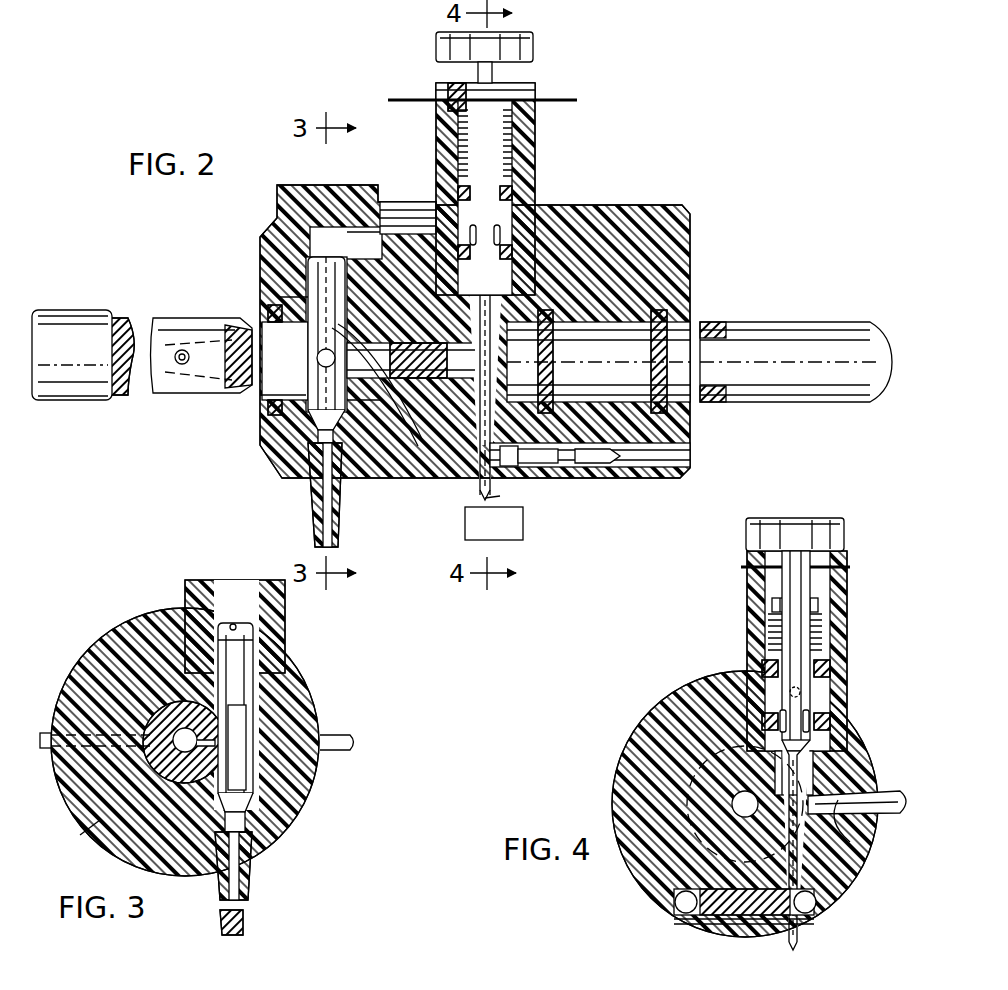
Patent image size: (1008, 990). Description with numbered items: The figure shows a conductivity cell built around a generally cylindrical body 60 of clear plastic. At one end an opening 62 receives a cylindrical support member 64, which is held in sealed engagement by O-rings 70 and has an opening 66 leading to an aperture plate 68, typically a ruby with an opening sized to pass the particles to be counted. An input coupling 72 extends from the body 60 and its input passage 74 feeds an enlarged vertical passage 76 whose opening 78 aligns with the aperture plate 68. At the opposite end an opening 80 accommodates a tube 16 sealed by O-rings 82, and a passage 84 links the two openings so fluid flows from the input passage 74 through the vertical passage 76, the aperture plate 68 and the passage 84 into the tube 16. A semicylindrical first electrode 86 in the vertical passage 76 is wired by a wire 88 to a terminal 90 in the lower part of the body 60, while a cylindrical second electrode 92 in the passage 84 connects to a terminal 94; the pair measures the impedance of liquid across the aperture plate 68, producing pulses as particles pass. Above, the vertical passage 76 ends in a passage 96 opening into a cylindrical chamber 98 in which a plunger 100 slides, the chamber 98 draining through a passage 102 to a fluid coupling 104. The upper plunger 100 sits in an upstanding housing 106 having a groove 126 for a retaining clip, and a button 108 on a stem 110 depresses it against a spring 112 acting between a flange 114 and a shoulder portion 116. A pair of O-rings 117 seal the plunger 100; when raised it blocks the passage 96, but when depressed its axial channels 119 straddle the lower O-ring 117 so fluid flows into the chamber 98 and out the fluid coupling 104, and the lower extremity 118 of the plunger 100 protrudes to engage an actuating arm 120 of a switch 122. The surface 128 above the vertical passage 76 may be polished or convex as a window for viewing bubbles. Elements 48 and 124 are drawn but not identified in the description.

In FIG. 2, the tube 16 is at (795, 323).
In FIG. 3, the pin 48 is at (45, 732).
In FIG. 2, the body 60 is at (645, 205).
In FIG. 3, the body 60 is at (135, 618).
In FIG. 4, the body 60 is at (692, 680).
In FIG. 2, the opening 62 is at (318, 360).
In FIG. 2, the support member 64 is at (166, 330).
In FIG. 3, the support member 64 is at (82, 836).
In FIG. 2, the opening 66 is at (246, 320).
In FIG. 2, the aperture plate 68 is at (182, 365).
In FIG. 3, the aperture plate 68 is at (220, 740).
In FIG. 4, the aperture plate 68 is at (745, 804).
In FIG. 2, the O-rings 70 is at (290, 405).
In FIG. 2, the input coupling 72 is at (312, 505).
In FIG. 3, the input coupling 72 is at (250, 880).
In FIG. 2, the input passage 74 is at (334, 532).
In FIG. 3, the input passage 74 is at (245, 915).
In FIG. 2, the vertical passage 76 is at (310, 425).
In FIG. 3, the vertical passage 76 is at (253, 640).
In FIG. 2, the opening 78 is at (265, 375).
In FIG. 2, the opening 80 is at (676, 330).
In FIG. 2, the O-rings 82 is at (668, 408).
In FIG. 2, the passage 84 is at (470, 378).
In FIG. 2, the first electrode 86 is at (320, 270).
In FIG. 3, the first electrode 86 is at (250, 680).
In FIG. 2, the wire 88 is at (415, 448).
In FIG. 2, the terminal 90 is at (658, 460).
In FIG. 4, the terminal 90 is at (815, 895).
In FIG. 2, the second electrode 92 is at (425, 350).
In FIG. 4, the terminal 94 is at (676, 920).
In FIG. 2, the passage 96 is at (346, 230).
In FIG. 3, the passage 96 is at (233, 622).
In FIG. 2, the cylindrical chamber 98 is at (495, 365).
In FIG. 4, the cylindrical chamber 98 is at (805, 730).
In FIG. 4, the plunger 100 is at (826, 508).
In FIG. 4, the passage 102 is at (850, 828).
In FIG. 3, the fluid coupling 104 is at (340, 752).
In FIG. 4, the fluid coupling 104 is at (878, 792).
In FIG. 2, the housing 106 is at (446, 143).
In FIG. 4, the housing 106 is at (797, 673).
In FIG. 2, the button 108 is at (534, 46).
In FIG. 4, the button 108 is at (795, 534).
In FIG. 2, the stem 110 is at (478, 71).
In FIG. 2, the spring 112 is at (462, 160).
In FIG. 4, the spring 112 is at (770, 625).
In FIG. 2, the flange 114 is at (448, 110).
In FIG. 2, the shoulder portion 116 is at (458, 192).
In FIG. 4, the shoulder portion 116 is at (825, 662).
In FIG. 2, the O-rings 117 is at (512, 245).
In FIG. 2, the lower extremity 118 is at (478, 490).
In FIG. 4, the lower extremity 118 is at (798, 935).
In FIG. 4, the channels 119 is at (780, 715).
In FIG. 2, the actuating arm 120 is at (500, 500).
In FIG. 2, the switch 122 is at (520, 535).
In FIG. 2, the cross pin 124 is at (578, 100).
In FIG. 4, the cross pin 124 is at (848, 567).
In FIG. 2, the groove 126 is at (512, 98).
In FIG. 2, the surface 128 is at (303, 192).